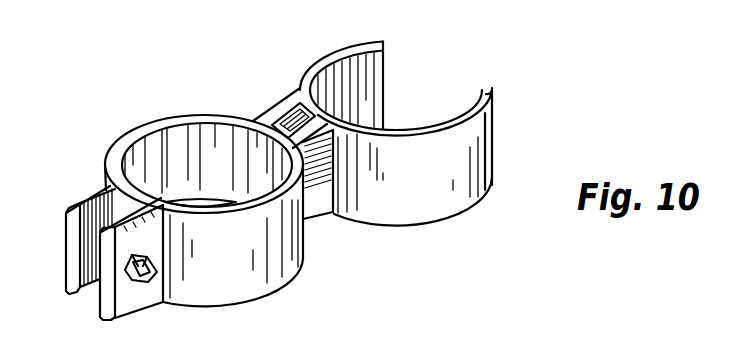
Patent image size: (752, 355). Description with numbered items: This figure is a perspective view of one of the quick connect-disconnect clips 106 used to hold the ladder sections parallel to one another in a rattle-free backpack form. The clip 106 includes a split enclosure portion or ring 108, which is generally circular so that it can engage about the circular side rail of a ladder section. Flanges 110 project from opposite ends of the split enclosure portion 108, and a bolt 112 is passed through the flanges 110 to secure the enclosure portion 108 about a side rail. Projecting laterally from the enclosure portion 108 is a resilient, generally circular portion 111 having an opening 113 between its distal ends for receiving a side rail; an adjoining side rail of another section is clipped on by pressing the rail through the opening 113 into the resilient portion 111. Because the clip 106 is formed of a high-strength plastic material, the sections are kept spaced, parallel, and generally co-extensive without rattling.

The clip 106 is at (257, 180).
The split enclosure portion 108 is at (120, 134).
The flanges 110 is at (82, 205).
The resilient generally circular portion 111 is at (322, 56).
The bolt 112 is at (150, 278).
The opening 113 is at (418, 87).